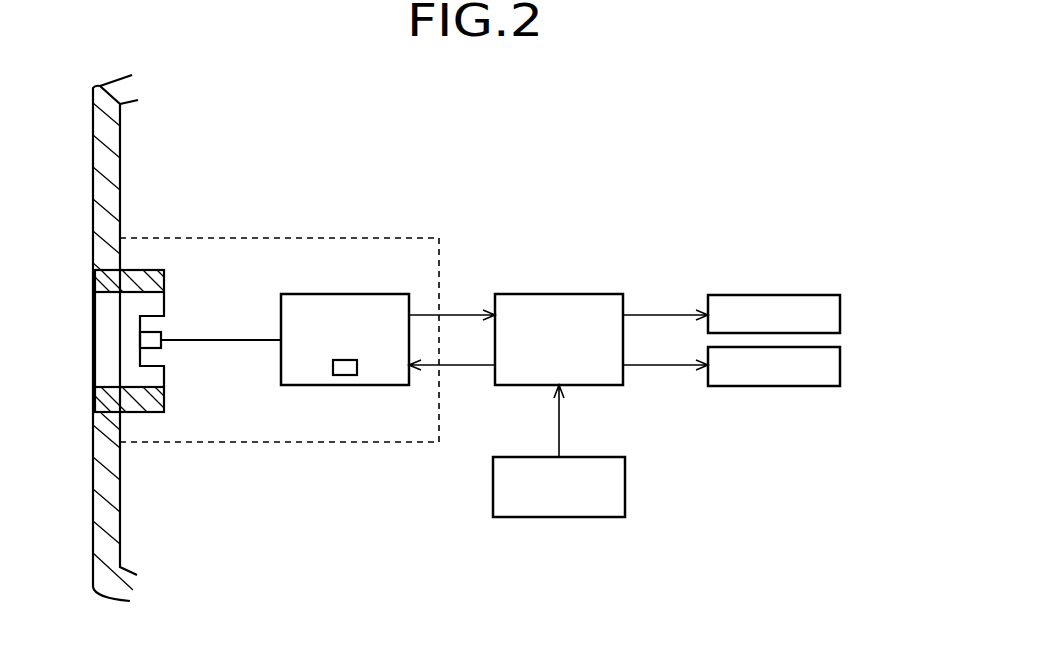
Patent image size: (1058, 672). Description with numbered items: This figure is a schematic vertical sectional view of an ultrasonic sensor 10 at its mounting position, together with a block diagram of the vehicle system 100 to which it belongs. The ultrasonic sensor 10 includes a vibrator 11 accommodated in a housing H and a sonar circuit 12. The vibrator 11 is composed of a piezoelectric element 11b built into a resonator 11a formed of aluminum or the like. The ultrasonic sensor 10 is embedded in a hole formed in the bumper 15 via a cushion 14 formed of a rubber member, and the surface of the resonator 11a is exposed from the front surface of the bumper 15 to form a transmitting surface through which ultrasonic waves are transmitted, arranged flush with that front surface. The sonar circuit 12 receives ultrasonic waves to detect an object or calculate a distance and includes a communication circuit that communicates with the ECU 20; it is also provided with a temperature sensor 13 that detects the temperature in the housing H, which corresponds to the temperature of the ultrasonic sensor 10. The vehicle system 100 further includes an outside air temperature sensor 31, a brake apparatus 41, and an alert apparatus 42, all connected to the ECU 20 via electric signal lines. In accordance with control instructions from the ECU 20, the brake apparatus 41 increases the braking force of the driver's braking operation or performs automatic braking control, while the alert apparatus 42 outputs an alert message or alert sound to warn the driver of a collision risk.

The vehicle system 100 is at (704, 214).
The ultrasonic sensor 10 is at (304, 444).
The housing H is at (391, 236).
The vibrator 11 is at (159, 372).
The resonator 11a is at (93, 318).
The piezoelectric element 11b is at (163, 346).
The sonar circuit 12 is at (345, 338).
The temperature sensor 13 is at (345, 376).
The cushion 14 is at (143, 413).
The bumper 15 is at (100, 88).
The ECU 20 is at (534, 294).
The outside air temperature sensor 31 is at (604, 457).
The brake apparatus 41 is at (840, 313).
The alert apparatus 42 is at (840, 363).